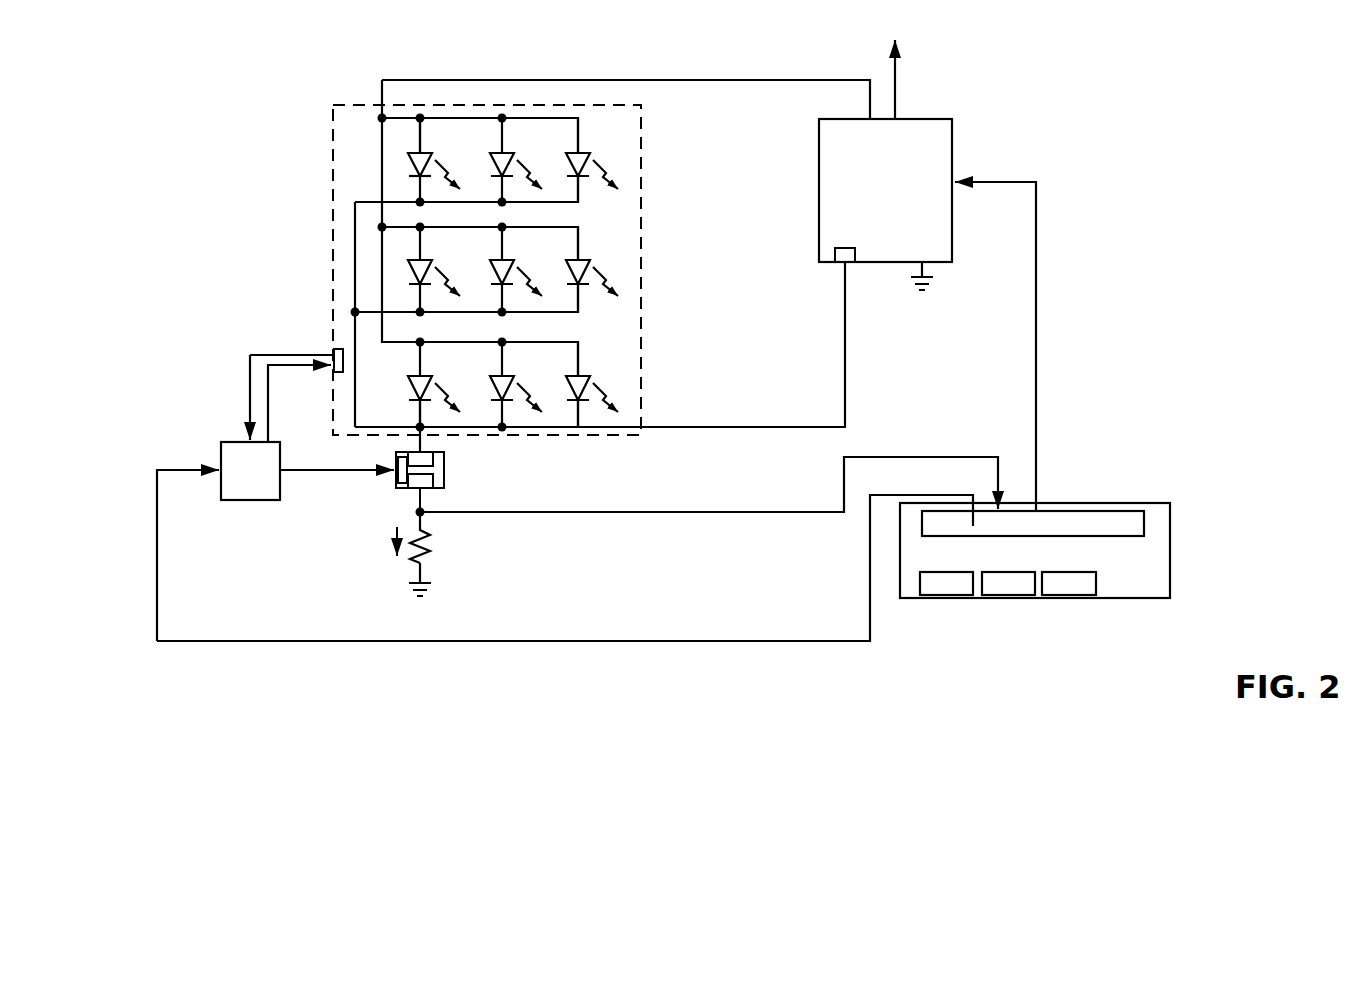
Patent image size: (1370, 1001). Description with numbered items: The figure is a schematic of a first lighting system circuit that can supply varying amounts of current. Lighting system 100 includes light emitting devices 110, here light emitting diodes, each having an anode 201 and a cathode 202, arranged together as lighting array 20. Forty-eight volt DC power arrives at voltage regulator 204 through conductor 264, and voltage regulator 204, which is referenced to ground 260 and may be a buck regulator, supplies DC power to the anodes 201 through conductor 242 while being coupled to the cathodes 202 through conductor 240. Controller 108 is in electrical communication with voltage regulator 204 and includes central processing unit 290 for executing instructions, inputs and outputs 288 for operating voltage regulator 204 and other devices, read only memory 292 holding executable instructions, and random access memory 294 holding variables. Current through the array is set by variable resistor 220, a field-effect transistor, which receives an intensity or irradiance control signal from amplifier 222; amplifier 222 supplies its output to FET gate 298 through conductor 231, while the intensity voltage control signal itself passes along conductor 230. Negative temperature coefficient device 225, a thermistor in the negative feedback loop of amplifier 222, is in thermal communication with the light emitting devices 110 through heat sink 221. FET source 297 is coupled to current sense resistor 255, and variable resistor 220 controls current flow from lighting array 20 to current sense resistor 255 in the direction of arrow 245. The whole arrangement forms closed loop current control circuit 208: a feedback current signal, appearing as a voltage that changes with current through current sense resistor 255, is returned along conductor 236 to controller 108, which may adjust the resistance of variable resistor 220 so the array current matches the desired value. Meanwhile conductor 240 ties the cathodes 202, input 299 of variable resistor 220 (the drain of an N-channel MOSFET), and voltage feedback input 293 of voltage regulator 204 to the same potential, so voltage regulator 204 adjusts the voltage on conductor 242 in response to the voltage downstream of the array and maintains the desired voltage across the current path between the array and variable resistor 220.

The lighting system 100 is at (322, 108).
The lighting array 20 is at (602, 207).
The light emitting device 110 is at (453, 150).
The anode 201 is at (412, 150).
The cathode 202 is at (412, 178).
The voltage regulator 204 is at (927, 315).
The closed loop current control circuit 208 is at (722, 460).
The variable resistor 220 is at (445, 468).
The heat sink 221 is at (333, 270).
The amplifier 222 is at (248, 436).
The negative temperature coefficient device 225 is at (335, 356).
The conductor 230 is at (166, 470).
The conductor 231 is at (291, 471).
The conductor 236 is at (478, 513).
The conductor 240 is at (847, 413).
The conductor 242 is at (633, 80).
The arrow 245 is at (393, 534).
The current sense resistor 255 is at (428, 558).
The ground 260 is at (926, 289).
The conductor 264 is at (896, 90).
The inputs and outputs 288 is at (1033, 523).
The central processing unit 290 is at (946, 583).
The read only memory 292 is at (1008, 583).
The voltage feedback input 293 is at (840, 256).
The random access memory 294 is at (1069, 583).
The FET source 297 is at (424, 482).
The FET gate 298 is at (398, 481).
The input 299 is at (411, 452).
The controller 108 is at (1035, 550).